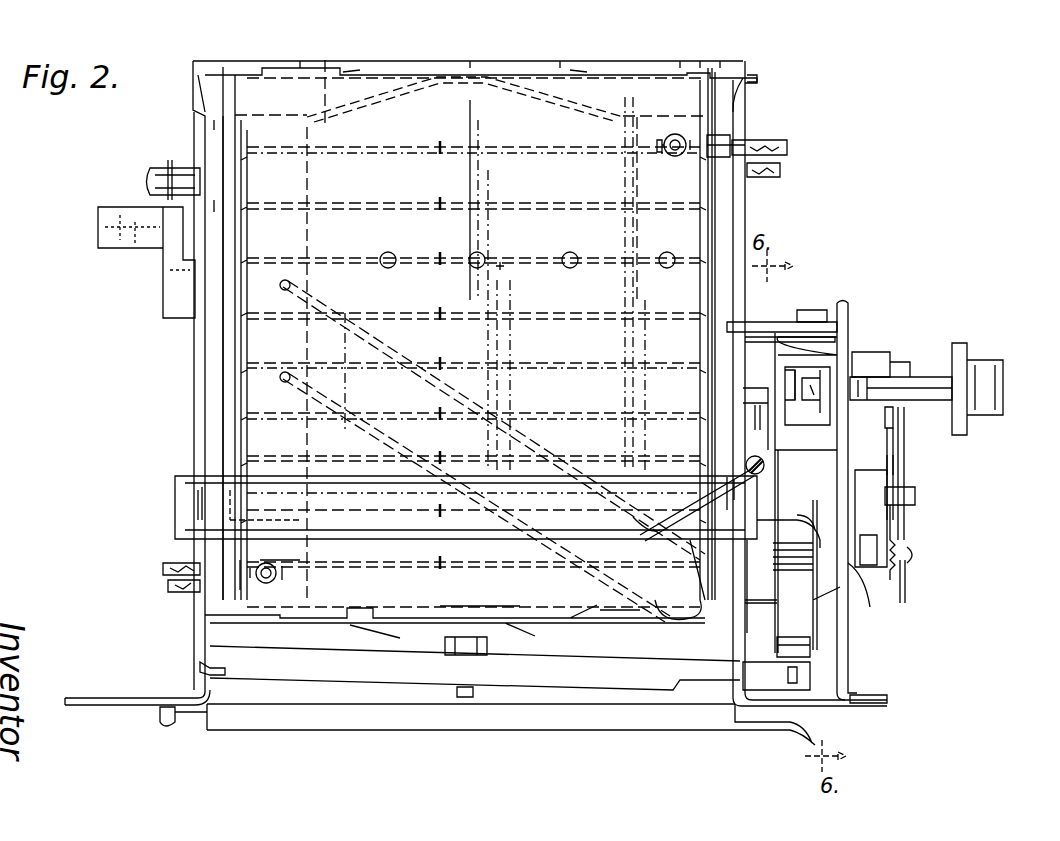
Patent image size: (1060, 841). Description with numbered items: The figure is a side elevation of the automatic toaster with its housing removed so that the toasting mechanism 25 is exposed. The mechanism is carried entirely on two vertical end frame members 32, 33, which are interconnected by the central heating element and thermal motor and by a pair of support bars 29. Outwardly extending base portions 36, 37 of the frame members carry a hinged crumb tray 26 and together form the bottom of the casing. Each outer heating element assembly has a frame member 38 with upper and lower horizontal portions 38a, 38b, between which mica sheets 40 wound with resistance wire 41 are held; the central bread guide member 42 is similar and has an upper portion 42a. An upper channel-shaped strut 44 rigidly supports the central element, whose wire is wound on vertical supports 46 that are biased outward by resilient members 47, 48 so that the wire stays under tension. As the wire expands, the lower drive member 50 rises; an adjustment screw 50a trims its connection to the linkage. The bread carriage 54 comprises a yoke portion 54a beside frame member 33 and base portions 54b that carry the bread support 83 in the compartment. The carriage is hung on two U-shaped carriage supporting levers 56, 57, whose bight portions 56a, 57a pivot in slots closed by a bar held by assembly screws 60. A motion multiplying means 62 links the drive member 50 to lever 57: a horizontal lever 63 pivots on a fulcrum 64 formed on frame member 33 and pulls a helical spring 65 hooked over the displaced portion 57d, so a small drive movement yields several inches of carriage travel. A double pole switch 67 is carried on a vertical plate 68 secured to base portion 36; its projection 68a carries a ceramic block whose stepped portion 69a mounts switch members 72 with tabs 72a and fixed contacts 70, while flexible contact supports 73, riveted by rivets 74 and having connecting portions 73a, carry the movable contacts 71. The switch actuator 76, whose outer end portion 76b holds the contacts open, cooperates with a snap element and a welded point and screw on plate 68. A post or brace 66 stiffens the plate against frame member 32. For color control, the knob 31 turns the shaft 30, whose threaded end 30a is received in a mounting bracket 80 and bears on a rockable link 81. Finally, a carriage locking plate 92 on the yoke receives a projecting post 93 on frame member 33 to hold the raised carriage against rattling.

The toasting mechanism 25 is at (790, 105).
The hinged crumb tray 26 is at (329, 721).
The support bars 29 is at (333, 526).
The color control shaft 30 is at (926, 377).
The threaded inner end of control shaft 30a is at (810, 412).
The manual control knob 31 is at (988, 378).
The end frame member 32 is at (747, 204).
The end frame member 33 is at (204, 126).
The base portion 36 is at (808, 699).
The base portion 37 is at (118, 703).
The frame member of outer heating element assembly 38 is at (202, 86).
The upper horizontally extending portion 38a is at (572, 73).
The lower horizontally extending portion 38b is at (510, 620).
The mica sheet 40 is at (446, 100).
The resistance wire 41 is at (370, 203).
The central bread guide member 42 is at (742, 76).
The upper horizontally extending portion 42a is at (710, 64).
The upper channel-shaped strut 44 is at (756, 78).
The vertically extending supports 46 is at (620, 233).
The resilient member 47 is at (530, 640).
The resilient member 48 is at (325, 60).
The lower drive member 50 is at (458, 644).
The adjustment screw 50a is at (462, 698).
The bread carriage 54 is at (118, 198).
The yoke portion 54a is at (126, 250).
The base portion 54b is at (170, 314).
The carriage supporting lever 56 is at (370, 348).
The bight portion 56a is at (752, 414).
The carriage supporting lever 57 is at (420, 434).
The bight portion 57a is at (706, 522).
The displaced portion 57d is at (800, 520).
The assembly screws 60 is at (748, 470).
The motion multiplying means 62 is at (554, 698).
The horizontally disposed lever 63 is at (510, 706).
The fulcrum 64 is at (200, 668).
The helical spring 65 is at (807, 657).
The post or brace 66 is at (768, 320).
The double pole switch 67 is at (953, 489).
The switch supporting plate 68 is at (848, 677).
The laterally extending projection 68a is at (870, 607).
The stepped portion 69a is at (886, 465).
The fixed contacts 70 is at (884, 418).
The movable contacts 71 is at (904, 419).
The switch members 72 is at (895, 450).
The laterally extending tab 72a is at (916, 500).
The flexible contact supports 73 is at (906, 473).
The contact connecting portions 73a is at (907, 590).
The rivets 74 is at (914, 548).
The switch actuator 76 is at (812, 309).
The outer end portion of actuator 76b is at (882, 352).
The mounting bracket 80 is at (802, 376).
The rockably mounted link 81 is at (783, 382).
The bread support 83 is at (505, 268).
The carriage locking plate 92 is at (170, 166).
The projecting post 93 is at (165, 180).